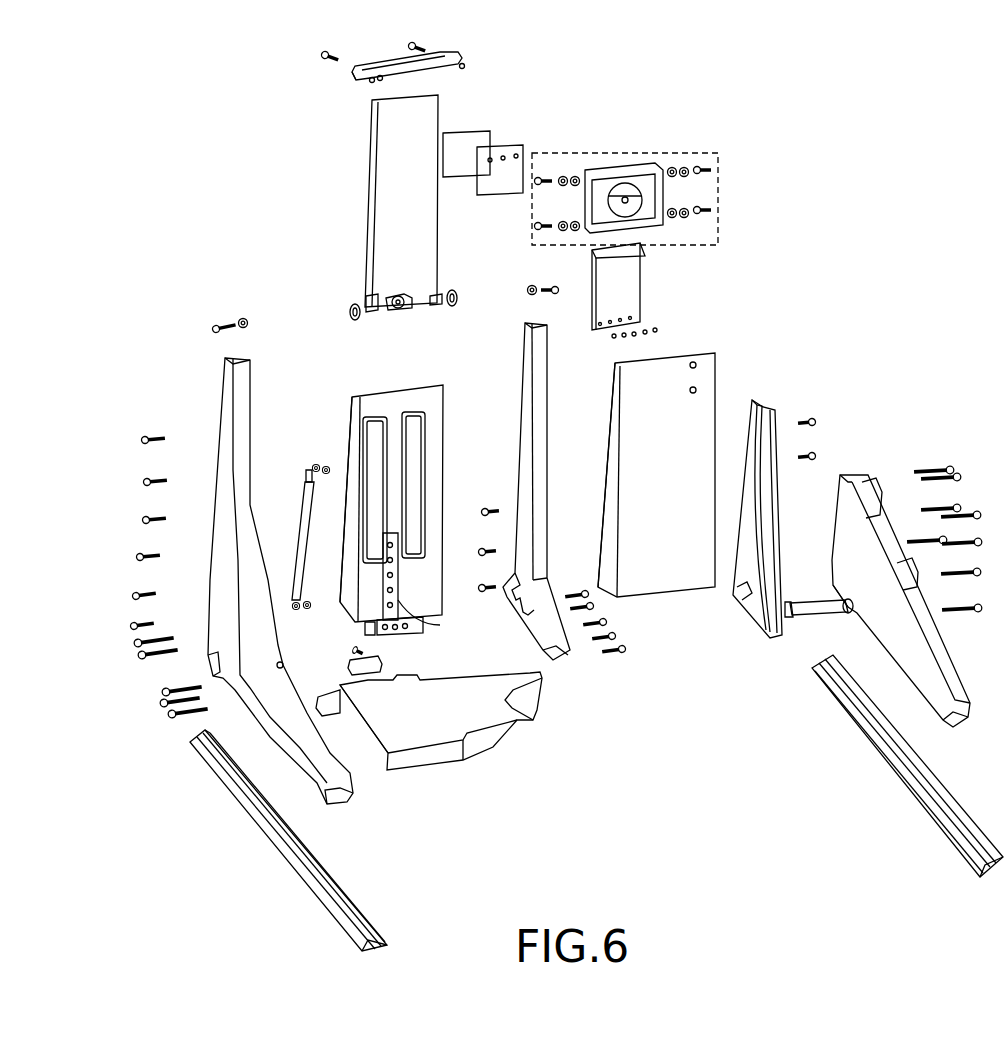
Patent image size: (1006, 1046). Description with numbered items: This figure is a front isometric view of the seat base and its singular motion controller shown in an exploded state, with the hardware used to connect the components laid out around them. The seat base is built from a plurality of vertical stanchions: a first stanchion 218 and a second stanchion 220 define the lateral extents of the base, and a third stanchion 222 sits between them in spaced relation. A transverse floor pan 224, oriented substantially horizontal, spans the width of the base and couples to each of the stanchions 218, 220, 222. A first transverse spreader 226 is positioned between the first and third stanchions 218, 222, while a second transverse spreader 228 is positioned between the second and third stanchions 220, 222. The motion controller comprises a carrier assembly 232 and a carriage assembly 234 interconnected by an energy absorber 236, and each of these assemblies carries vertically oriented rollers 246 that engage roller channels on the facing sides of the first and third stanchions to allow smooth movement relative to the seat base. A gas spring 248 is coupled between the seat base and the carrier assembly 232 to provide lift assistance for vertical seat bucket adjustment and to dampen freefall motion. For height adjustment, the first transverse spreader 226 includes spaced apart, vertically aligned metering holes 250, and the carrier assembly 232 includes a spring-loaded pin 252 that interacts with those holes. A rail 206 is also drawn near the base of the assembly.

The rail 206 is at (950, 836).
The first stanchion 218 is at (238, 393).
The second stanchion 220 is at (765, 407).
The third stanchion 222 is at (527, 360).
The transverse floor pan 224 is at (508, 735).
The first transverse spreader 226 is at (401, 490).
The second transverse spreader 228 is at (706, 370).
The carrier assembly 232 is at (372, 198).
The carriage assembly 234 is at (481, 221).
The energy absorber 236 is at (628, 293).
The rollers 246 is at (622, 170).
The gas spring 248 is at (305, 497).
The metering holes 250 is at (402, 616).
The spring-loaded pin 252 is at (392, 298).